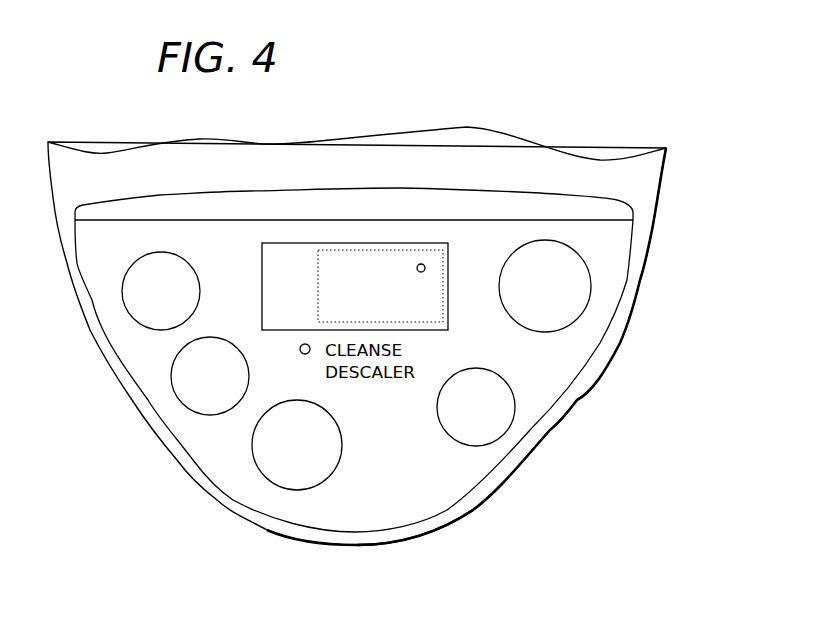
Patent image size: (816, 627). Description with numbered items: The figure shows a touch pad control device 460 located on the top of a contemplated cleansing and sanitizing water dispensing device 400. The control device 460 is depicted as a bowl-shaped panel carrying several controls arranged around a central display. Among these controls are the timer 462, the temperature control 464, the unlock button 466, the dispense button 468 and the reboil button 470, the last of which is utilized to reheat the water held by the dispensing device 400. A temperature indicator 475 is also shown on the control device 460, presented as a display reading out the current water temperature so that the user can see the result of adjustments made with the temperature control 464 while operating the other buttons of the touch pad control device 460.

The cleansing and sanitizing water dispensing device 400 is at (565, 132).
The touch pad control device 460 is at (435, 515).
The timer 462 is at (133, 312).
The temperature control 464 is at (178, 383).
The unlock button 466 is at (490, 428).
The dispense button 468 is at (568, 308).
The reboil button 470 is at (277, 473).
The temperature indicator 475 is at (350, 247).